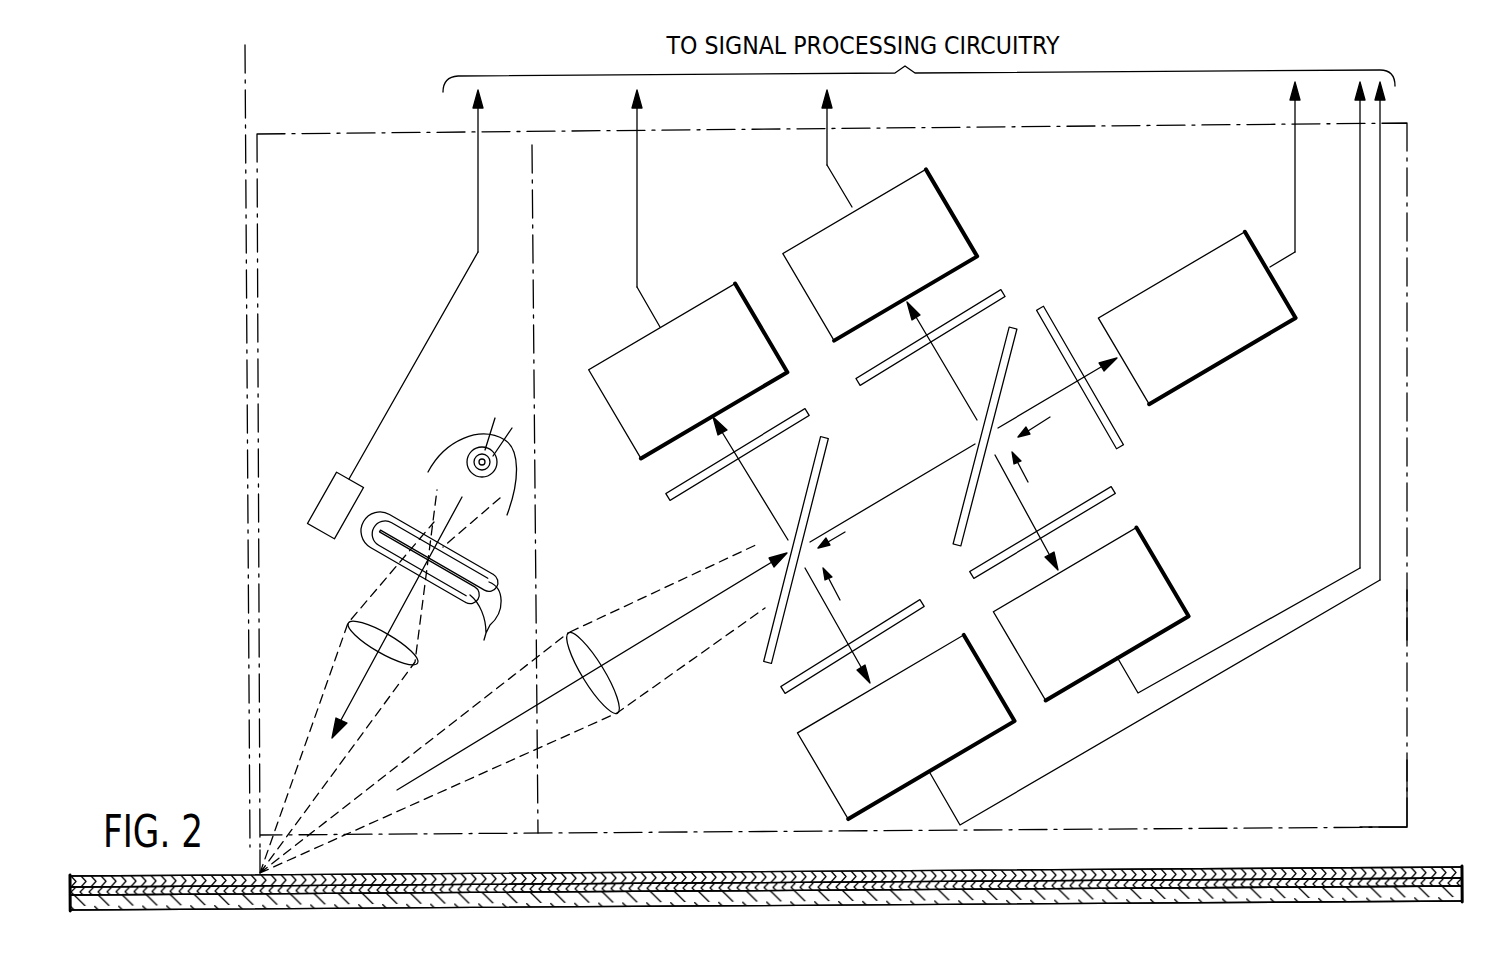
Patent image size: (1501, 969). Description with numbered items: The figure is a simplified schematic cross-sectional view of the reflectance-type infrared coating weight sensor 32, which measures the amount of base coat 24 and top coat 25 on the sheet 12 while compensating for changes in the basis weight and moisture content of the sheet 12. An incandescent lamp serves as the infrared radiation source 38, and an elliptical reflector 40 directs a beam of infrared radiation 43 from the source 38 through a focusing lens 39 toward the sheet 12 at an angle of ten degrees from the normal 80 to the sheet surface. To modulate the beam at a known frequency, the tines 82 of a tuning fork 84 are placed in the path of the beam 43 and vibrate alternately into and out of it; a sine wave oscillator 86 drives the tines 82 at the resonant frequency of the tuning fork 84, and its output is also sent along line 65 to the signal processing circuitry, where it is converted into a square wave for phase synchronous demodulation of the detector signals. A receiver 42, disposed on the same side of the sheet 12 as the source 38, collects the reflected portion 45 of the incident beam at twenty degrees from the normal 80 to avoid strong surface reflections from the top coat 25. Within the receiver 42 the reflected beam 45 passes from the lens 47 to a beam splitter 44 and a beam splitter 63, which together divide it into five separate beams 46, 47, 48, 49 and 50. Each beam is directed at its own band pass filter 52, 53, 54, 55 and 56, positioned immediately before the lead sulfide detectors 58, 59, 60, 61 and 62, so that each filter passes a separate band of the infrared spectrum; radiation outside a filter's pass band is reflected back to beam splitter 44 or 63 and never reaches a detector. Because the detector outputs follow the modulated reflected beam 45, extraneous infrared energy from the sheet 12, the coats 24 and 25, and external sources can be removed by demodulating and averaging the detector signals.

The sheet 12 is at (765, 846).
The base coat 24 is at (765, 838).
The top coat 25 is at (765, 834).
The infrared coating weight sensor 32 is at (1410, 702).
The infrared radiation source 38 is at (445, 473).
The focusing lens 39 is at (352, 640).
The elliptical reflector 40 is at (455, 455).
The receiver 42 is at (1383, 613).
The beam of infrared radiation 43 is at (365, 688).
The beam splitter 44 is at (768, 655).
The reflected portion of incident infrared beam 45 is at (655, 633).
The beam 46 is at (847, 633).
The beam 47 is at (615, 718).
The beam 48 is at (1060, 394).
The beam 49 is at (950, 377).
The beam 50 is at (757, 490).
The band pass filter 52 is at (783, 690).
The band pass filter 53 is at (1115, 487).
The band pass filter 54 is at (1122, 443).
The band pass filter 55 is at (1000, 297).
The band pass filter 56 is at (662, 502).
The detector 58 is at (978, 760).
The detector 59 is at (1168, 580).
The detector 60 is at (1222, 247).
The detector 61 is at (815, 234).
The detector 62 is at (625, 350).
The beam splitter 63 is at (958, 540).
The line 65 is at (435, 330).
The normal 80 is at (243, 108).
The tines 82 is at (483, 625).
The tuning fork 84 is at (365, 540).
The sine wave oscillator 86 is at (325, 492).